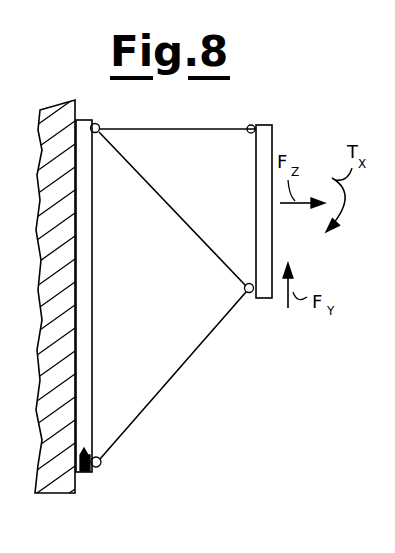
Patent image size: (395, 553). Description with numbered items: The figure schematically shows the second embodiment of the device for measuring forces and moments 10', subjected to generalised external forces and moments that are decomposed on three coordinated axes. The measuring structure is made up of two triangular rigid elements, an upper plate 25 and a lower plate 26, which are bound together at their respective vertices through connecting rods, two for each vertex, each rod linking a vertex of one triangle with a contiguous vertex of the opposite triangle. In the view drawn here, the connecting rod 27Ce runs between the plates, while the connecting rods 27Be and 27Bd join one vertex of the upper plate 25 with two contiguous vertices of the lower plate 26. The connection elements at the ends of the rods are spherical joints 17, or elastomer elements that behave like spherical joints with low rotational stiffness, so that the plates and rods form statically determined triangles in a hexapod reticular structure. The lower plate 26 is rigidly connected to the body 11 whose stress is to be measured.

The body 11 is at (40, 309).
The spherical joints 17 is at (98, 127).
The upper plate 25 is at (267, 150).
The lower plate 26 is at (85, 473).
The connecting rod 27Ce is at (180, 128).
The connecting rod 27Be is at (181, 217).
The connecting rod 27Bd is at (181, 367).
The device for measuring forces and moments 10' is at (347, 62).